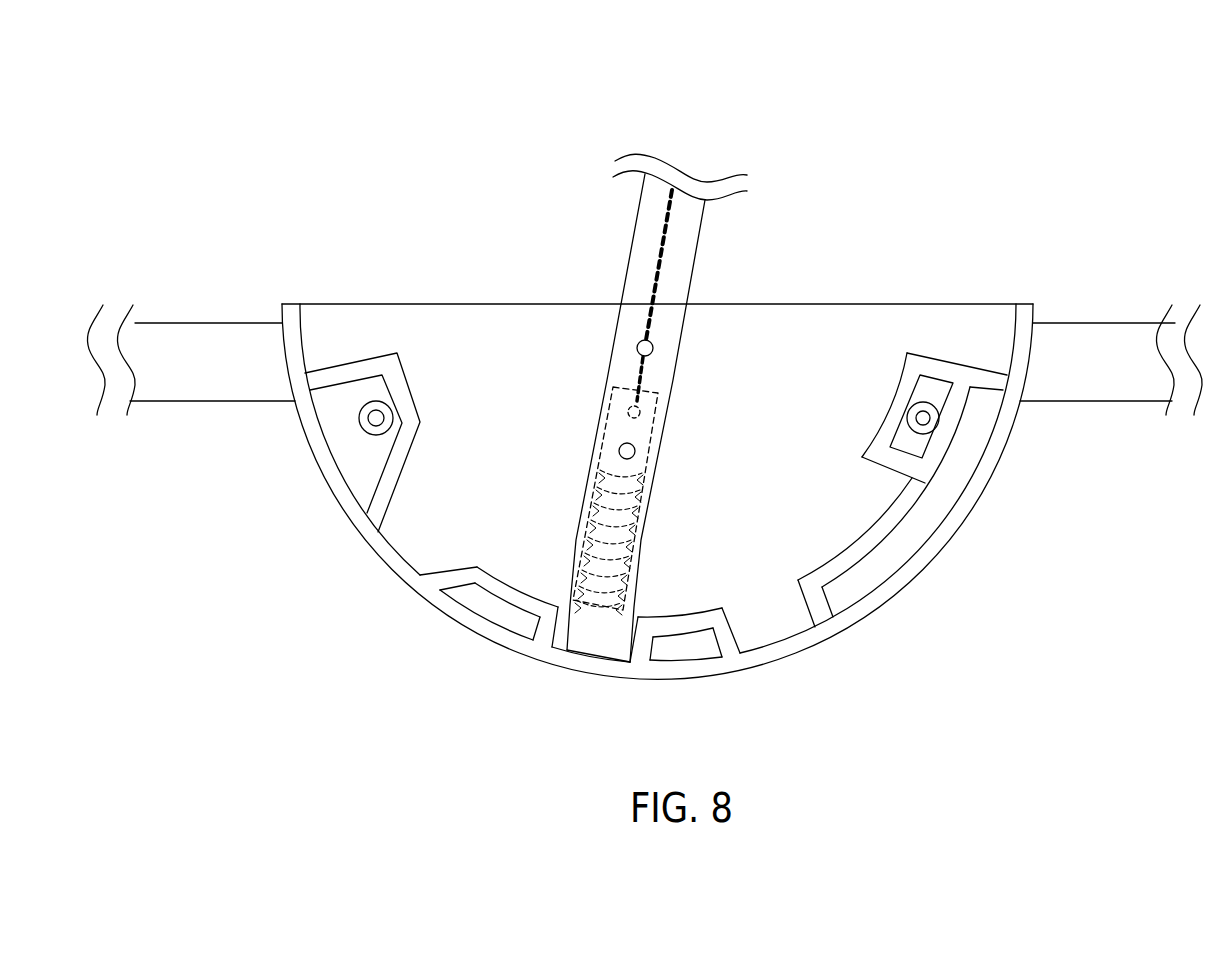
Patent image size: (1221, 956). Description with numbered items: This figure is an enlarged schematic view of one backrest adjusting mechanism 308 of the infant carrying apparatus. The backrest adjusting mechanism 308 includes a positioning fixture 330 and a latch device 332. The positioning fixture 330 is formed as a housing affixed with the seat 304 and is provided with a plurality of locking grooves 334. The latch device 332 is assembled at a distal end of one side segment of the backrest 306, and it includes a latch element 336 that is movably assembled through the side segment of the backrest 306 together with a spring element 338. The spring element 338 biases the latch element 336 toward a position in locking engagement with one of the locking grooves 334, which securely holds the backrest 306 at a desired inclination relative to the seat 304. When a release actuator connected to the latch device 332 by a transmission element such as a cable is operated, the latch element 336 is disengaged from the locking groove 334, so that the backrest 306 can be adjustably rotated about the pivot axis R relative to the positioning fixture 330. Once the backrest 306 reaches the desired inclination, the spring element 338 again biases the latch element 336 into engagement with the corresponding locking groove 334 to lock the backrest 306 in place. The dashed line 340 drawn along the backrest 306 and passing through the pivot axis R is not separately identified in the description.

The seat 304 is at (193, 333).
The backrest 306 is at (700, 250).
The backrest adjusting mechanism 308 is at (993, 115).
The positioning fixture 330 is at (927, 552).
The latch device 332 is at (673, 589).
The locking grooves 334 is at (558, 628).
The latch element 336 is at (589, 638).
The spring element 338 is at (650, 505).
The pivot axis line 340 is at (655, 266).
The pivot axis R is at (636, 348).